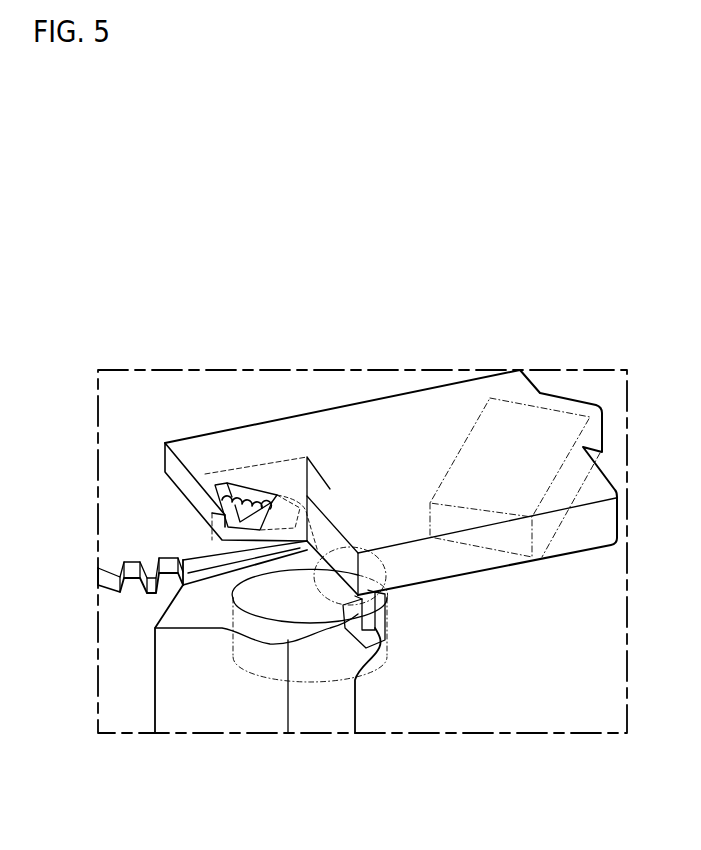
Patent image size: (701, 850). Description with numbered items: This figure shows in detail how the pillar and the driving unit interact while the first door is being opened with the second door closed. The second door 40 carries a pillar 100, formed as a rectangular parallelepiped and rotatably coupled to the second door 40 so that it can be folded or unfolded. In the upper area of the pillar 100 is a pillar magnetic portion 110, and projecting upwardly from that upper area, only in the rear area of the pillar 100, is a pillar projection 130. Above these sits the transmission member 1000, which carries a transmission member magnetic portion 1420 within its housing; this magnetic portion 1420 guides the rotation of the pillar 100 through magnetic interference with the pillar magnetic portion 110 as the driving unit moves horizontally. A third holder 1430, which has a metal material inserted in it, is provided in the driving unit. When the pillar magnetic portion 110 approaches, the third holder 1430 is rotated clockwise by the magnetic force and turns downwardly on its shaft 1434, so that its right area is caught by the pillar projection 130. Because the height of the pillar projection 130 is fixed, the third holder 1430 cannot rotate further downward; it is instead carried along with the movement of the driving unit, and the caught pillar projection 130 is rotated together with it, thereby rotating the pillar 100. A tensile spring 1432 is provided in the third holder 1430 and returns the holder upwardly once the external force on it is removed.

The second door 40 is at (525, 655).
The pillar 100 is at (207, 710).
The pillar magnetic portion 110 is at (317, 605).
The pillar projection 130 is at (376, 640).
The transmission member 1000 is at (330, 400).
The transmission member magnetic portion 1420 is at (480, 437).
The third holder 1430 is at (215, 485).
The tensile spring 1432 is at (307, 496).
The shaft 1434 is at (183, 574).